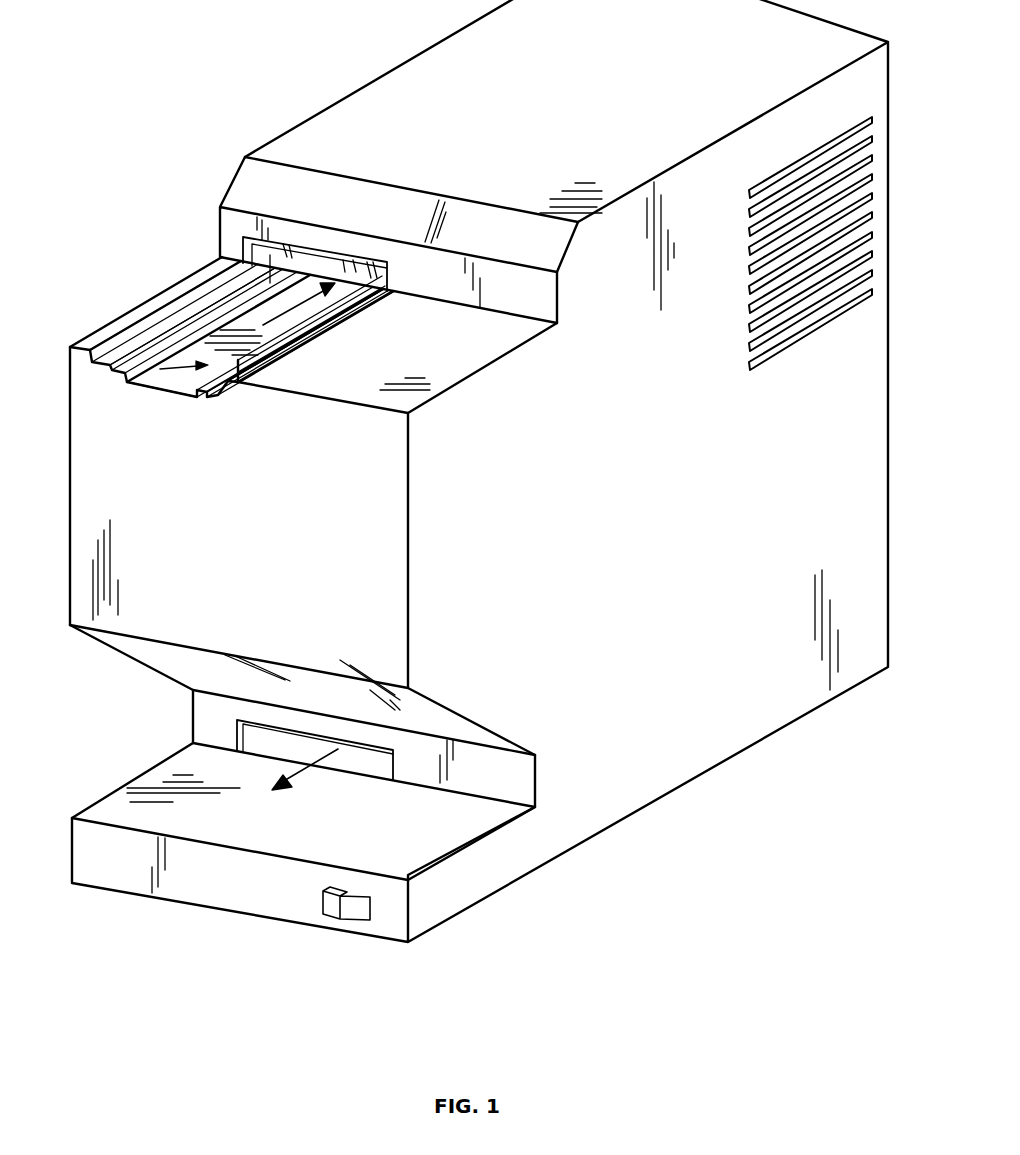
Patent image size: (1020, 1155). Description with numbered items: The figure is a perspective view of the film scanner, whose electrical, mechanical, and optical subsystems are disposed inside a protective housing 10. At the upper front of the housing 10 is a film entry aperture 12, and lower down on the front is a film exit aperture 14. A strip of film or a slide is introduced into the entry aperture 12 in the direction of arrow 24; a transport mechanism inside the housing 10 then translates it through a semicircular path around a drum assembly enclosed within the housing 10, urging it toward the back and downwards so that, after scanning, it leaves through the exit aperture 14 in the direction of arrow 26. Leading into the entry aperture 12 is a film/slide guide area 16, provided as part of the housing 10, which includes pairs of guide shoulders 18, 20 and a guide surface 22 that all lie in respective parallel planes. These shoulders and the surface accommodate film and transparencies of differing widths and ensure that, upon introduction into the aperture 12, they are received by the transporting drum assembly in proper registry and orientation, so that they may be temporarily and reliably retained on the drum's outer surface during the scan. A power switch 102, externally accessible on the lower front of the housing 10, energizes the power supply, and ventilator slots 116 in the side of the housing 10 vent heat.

The protective housing 10 is at (570, 823).
The film entry aperture 12 is at (315, 277).
The film exit aperture 14 is at (282, 742).
The film/slide guide area 16 is at (115, 375).
The guide shoulders 18 is at (212, 320).
The guide shoulders 20 is at (173, 320).
The guide surface 22 is at (160, 384).
The arrow 24 is at (293, 312).
The arrow 26 is at (308, 775).
The power switch 102 is at (338, 920).
The ventilator slots 116 is at (792, 345).